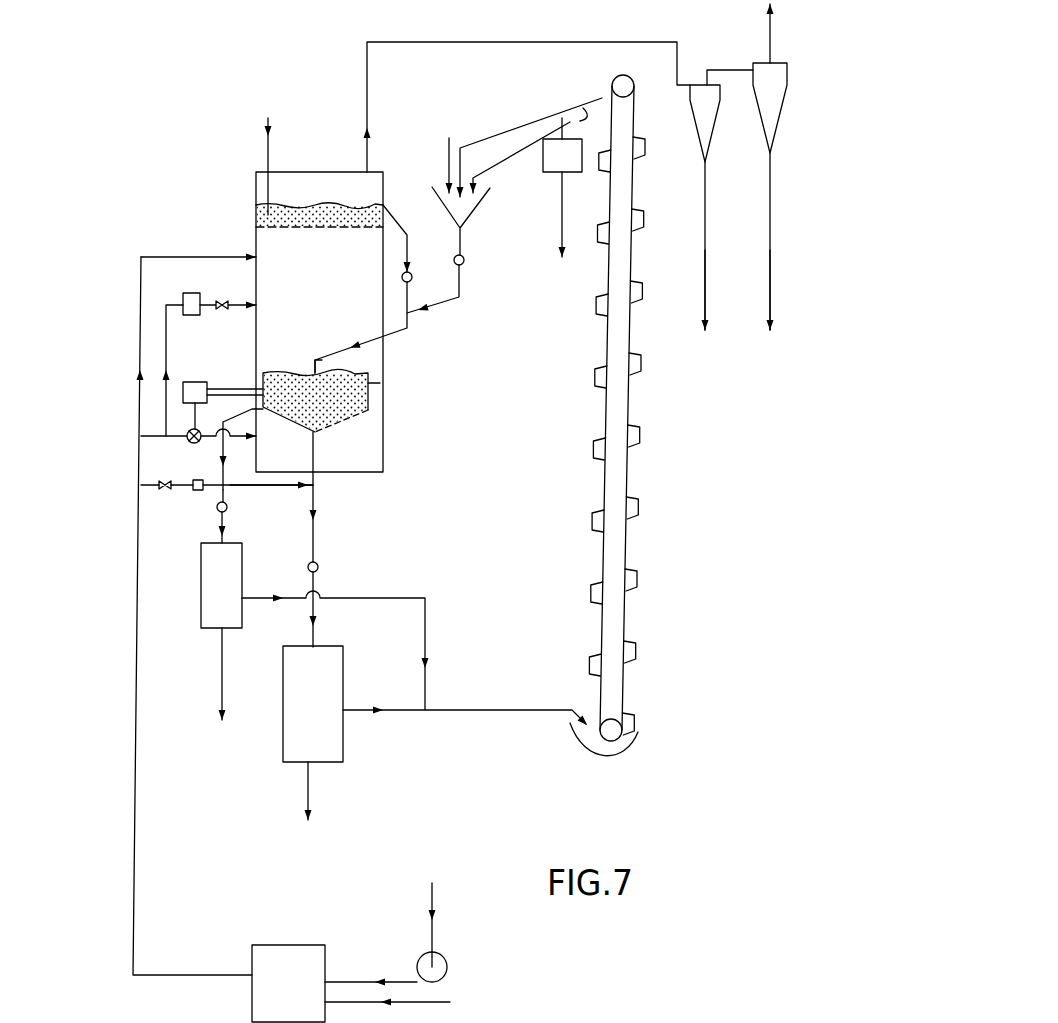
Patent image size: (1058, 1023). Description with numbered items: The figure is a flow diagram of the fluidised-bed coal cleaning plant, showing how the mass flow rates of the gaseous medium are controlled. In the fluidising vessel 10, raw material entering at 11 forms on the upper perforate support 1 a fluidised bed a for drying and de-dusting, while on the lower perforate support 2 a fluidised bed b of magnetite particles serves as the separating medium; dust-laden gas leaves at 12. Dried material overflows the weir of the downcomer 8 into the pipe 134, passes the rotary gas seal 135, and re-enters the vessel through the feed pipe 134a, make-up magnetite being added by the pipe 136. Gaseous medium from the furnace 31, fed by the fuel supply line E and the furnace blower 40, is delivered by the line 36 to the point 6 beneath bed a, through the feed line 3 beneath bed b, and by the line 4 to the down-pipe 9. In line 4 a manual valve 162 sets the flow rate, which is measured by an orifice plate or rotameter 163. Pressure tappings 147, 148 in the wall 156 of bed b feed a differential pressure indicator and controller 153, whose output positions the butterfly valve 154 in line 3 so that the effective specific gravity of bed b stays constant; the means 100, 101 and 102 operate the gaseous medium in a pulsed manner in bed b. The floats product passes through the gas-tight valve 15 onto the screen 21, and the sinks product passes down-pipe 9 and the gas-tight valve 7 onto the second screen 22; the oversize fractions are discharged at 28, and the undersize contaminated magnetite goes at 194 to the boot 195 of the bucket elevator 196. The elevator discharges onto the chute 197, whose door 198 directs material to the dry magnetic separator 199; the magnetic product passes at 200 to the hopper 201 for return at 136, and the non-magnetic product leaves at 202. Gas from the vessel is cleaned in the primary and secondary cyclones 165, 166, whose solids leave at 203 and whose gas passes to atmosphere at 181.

The perforate support 1 is at (327, 228).
The perforate support 2 is at (355, 425).
The feed line 3 is at (211, 432).
The line 4 is at (277, 490).
The gaseous medium supply point 6 is at (256, 260).
The gas-tight valve 7 is at (319, 565).
The downcomer 8 is at (384, 205).
The down-pipe 9 is at (316, 453).
The fluidising vessel 10 is at (256, 181).
The raw material inlet 11 is at (268, 136).
The gas outlet 12 is at (367, 94).
The gas-tight valve 15 is at (227, 507).
The screen 21 is at (221, 585).
The second screen 22 is at (313, 704).
The oversize product discharge 28 is at (222, 675).
The furnace 31 is at (288, 983).
The delivery line 36 is at (139, 620).
The furnace blower or fan 40 is at (447, 962).
The pulsing means 100 is at (185, 300).
The pulsing means 101 is at (166, 333).
The pulsing means 102 is at (228, 299).
The pipe 134 is at (400, 218).
The feed pipe 134a is at (330, 358).
The rotary gas seal 135 is at (411, 274).
The magnetite pipe 136 is at (460, 290).
The pressure tapping 147 is at (263, 388).
The pressure tapping 148 is at (257, 408).
The differential pressure indicator and controller 153 is at (193, 382).
The butterfly valve 154 is at (188, 443).
The baffle wall 156 is at (380, 378).
The valve 162 is at (180, 476).
The flow measuring device 163 is at (197, 492).
The primary cyclone 165 is at (695, 122).
The secondary cyclone 166 is at (763, 117).
The gas outlet to atmosphere 181 is at (770, 24).
The undersize product line 194 is at (403, 600).
The boot 195 is at (592, 755).
The bucket elevator 196 is at (641, 439).
The chute 197 is at (513, 130).
The hinged or sliding door 198 is at (584, 108).
The dry magnetic separator 199 is at (553, 168).
The magnetic product outlet 200 is at (493, 170).
The hopper 201 is at (465, 223).
The non-magnetic product outlet 202 is at (560, 232).
The cyclone solids outlet 203 is at (770, 253).
The fluidised bed a is at (297, 205).
The fluidised bed b is at (292, 376).
The fuel supply line E is at (395, 1004).